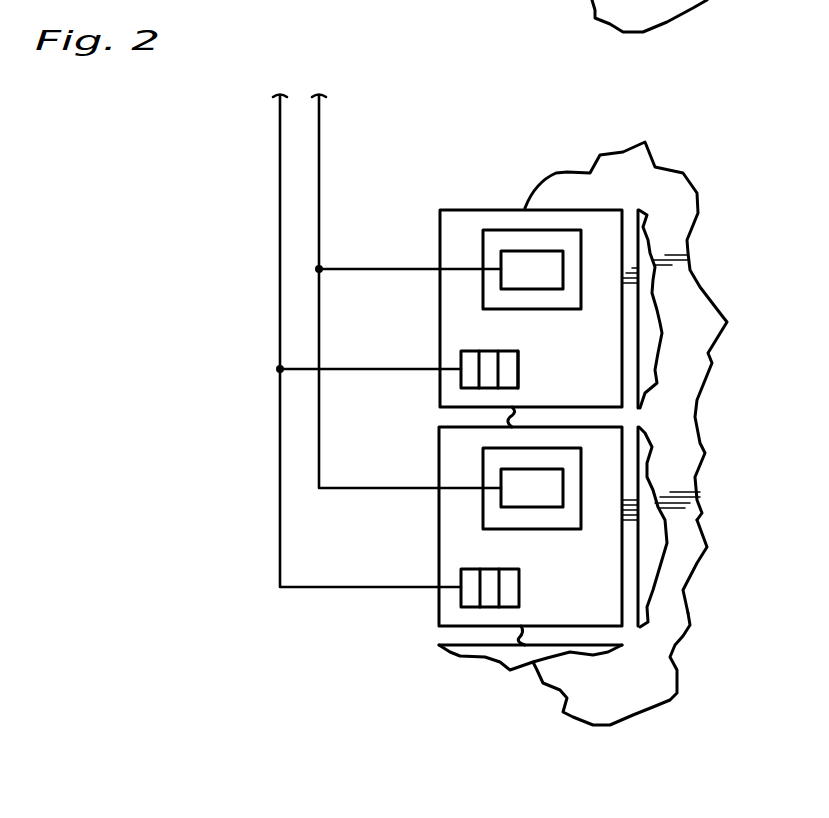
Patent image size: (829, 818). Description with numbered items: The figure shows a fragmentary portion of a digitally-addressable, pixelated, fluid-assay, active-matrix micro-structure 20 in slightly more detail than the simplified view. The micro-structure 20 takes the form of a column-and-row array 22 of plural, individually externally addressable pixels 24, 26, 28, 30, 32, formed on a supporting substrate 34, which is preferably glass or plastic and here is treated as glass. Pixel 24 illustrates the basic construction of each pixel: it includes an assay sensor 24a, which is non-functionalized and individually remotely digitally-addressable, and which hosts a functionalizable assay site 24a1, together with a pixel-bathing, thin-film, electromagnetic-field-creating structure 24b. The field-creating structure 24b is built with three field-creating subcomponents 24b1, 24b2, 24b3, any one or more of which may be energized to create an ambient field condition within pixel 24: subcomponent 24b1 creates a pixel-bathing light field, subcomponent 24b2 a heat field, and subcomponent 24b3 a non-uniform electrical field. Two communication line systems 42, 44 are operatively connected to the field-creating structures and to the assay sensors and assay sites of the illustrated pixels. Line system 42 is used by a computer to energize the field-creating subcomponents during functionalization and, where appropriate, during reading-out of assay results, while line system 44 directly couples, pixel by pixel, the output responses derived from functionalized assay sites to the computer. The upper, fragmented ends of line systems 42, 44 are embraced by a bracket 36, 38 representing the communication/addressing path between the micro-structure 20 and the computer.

The micro-structure 20 is at (440, 133).
The column-and-row array 22 is at (577, 192).
The pixel 24 is at (489, 290).
The assay sensor 24a is at (498, 231).
The assay site 24a1 is at (543, 249).
The field-creating structure 24b is at (486, 364).
The field-creating subcomponent 24b1 is at (530, 338).
The field-creating subcomponent 24b2 is at (490, 368).
The field-creating subcomponent 24b3 is at (510, 378).
The pixel 26 is at (435, 604).
The pixel 28 is at (652, 220).
The pixel 30 is at (655, 461).
The pixel 32 is at (485, 660).
The substrate 34 is at (692, 552).
The bracket 36 is at (300, 70).
The double-headed broad arrow 38 is at (338, 92).
The communication line system 42 is at (300, 370).
The communication line system 44 is at (340, 272).